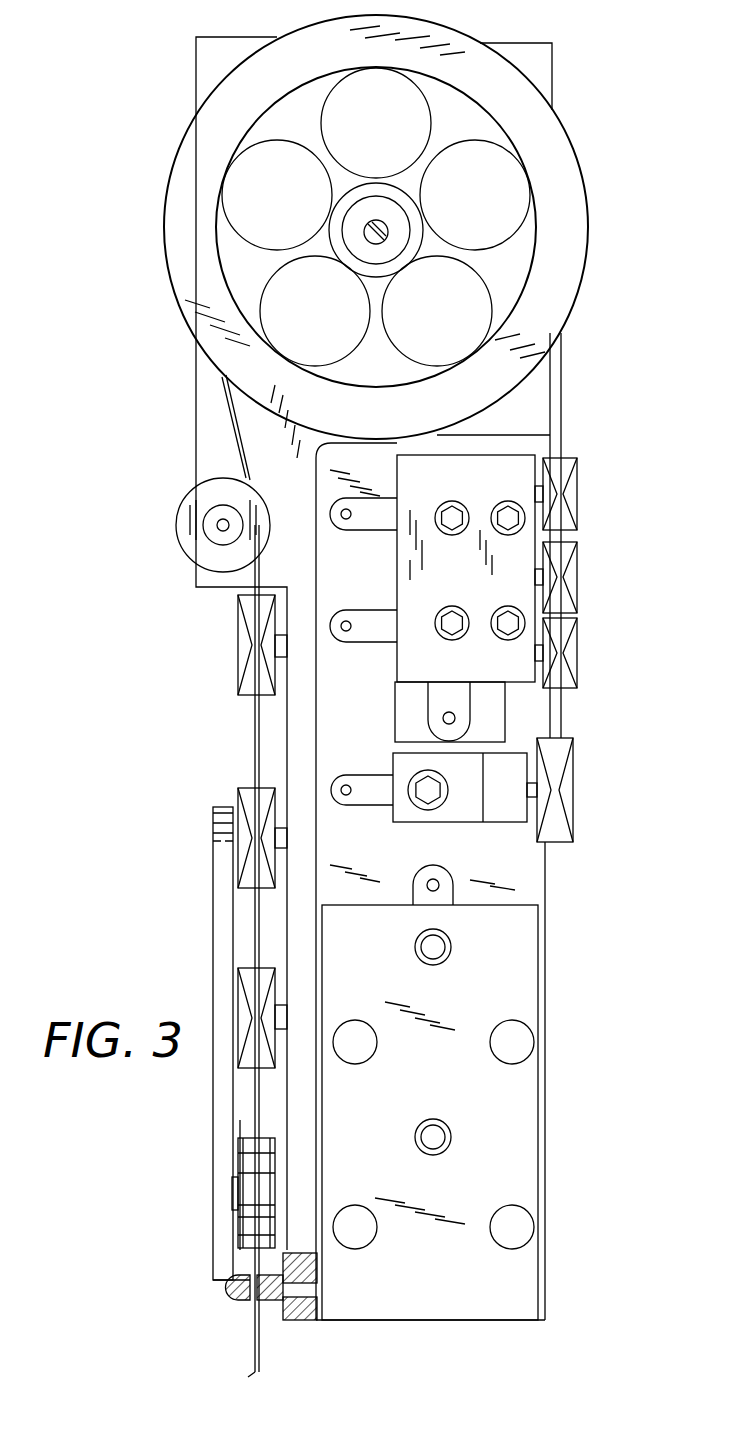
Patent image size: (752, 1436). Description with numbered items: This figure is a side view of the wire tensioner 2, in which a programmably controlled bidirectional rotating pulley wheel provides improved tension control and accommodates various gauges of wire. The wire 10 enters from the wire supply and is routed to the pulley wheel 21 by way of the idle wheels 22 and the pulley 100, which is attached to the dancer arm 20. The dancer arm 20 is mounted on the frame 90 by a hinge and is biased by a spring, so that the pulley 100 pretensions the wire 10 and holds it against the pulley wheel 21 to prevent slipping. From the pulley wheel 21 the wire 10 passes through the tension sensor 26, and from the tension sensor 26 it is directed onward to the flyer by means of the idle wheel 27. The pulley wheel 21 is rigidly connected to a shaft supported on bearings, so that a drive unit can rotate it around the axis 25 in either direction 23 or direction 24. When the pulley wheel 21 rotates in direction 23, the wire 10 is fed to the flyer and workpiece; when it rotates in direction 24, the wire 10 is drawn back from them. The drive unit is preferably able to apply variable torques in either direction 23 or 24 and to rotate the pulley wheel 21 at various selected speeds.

The wire tensioner 2 is at (200, 710).
The wire 10 is at (250, 1336).
The dancer arm 20 is at (230, 915).
The pulley wheel 21 is at (570, 182).
The idle wheels 22 is at (180, 533).
The direction of rotation 23 is at (447, 13).
The direction of rotation 24 is at (292, 10).
The axis 25 is at (380, 240).
The tension sensor 26 is at (410, 661).
The idle wheel 27 is at (573, 795).
The frame 90 is at (527, 880).
The pulley 100 is at (243, 793).